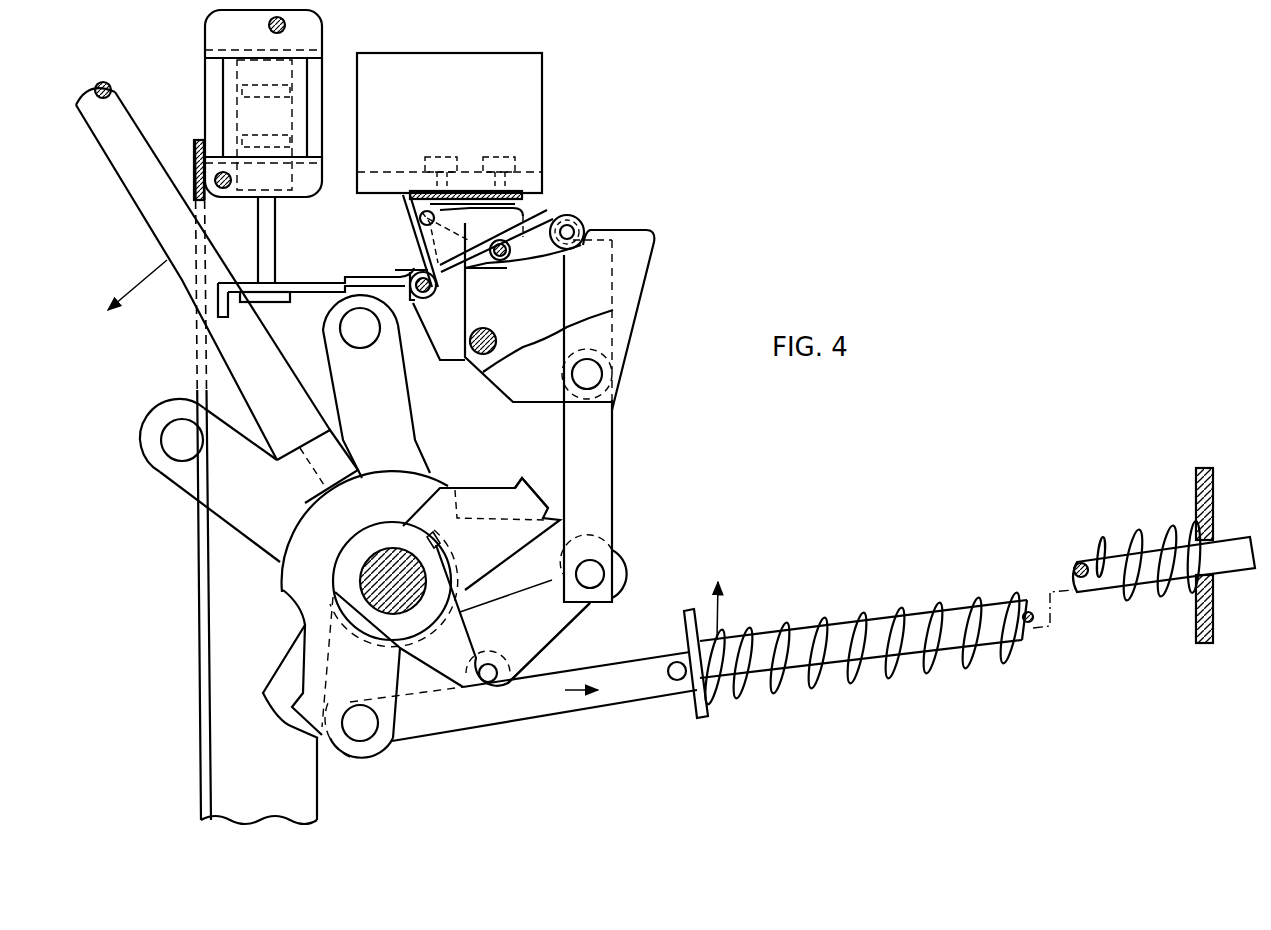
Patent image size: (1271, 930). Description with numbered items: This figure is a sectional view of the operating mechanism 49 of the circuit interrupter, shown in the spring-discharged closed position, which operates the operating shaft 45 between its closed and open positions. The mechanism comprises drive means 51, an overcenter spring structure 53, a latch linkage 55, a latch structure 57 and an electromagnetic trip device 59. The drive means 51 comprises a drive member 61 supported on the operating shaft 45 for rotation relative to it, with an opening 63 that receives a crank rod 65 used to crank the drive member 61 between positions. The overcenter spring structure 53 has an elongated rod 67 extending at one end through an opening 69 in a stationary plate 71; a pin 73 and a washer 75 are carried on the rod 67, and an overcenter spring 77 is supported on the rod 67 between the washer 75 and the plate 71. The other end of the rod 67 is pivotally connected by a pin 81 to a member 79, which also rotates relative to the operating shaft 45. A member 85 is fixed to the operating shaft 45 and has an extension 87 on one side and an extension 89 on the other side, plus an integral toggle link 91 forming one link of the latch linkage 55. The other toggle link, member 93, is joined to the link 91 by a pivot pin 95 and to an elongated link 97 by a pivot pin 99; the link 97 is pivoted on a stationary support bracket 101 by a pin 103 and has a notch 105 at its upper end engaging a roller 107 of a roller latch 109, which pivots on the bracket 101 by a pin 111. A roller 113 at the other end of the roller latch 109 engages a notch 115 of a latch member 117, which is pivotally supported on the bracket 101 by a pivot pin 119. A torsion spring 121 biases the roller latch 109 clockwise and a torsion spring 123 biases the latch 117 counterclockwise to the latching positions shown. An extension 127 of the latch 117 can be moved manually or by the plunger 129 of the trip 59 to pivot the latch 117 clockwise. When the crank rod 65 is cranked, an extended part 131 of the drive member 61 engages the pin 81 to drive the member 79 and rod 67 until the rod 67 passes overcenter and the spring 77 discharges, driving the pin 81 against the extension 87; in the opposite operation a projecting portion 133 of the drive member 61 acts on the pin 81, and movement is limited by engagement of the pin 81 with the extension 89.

The operating shaft 45 is at (363, 574).
The operating mechanism 49 is at (451, 432).
The drive means 51 is at (368, 509).
The overcenter spring structure 53 is at (636, 698).
The latch linkage 55 is at (534, 637).
The latch structure 57 is at (503, 231).
The trip device 59 is at (268, 124).
The drive member 61 is at (296, 527).
The opening 63 is at (295, 452).
The crank rod 65 is at (125, 114).
The elongated rod 67 is at (558, 713).
The opening 69 is at (1216, 542).
The stationary plate 71 is at (1196, 483).
The pin 73 is at (670, 662).
The washer 75 is at (686, 630).
The overcenter spring 77 is at (790, 622).
The member 79 is at (422, 690).
The pin 81 is at (361, 742).
The member 85 is at (476, 552).
The extension 87 is at (483, 497).
The extension 89 is at (305, 722).
The toggle link 91 is at (478, 608).
The member 93 is at (577, 620).
The pivot pin 95 is at (484, 664).
The elongated link 97 is at (598, 473).
The pivot pin 99 is at (598, 562).
The support bracket 101 is at (492, 370).
The pin 103 is at (588, 366).
The notch 105 is at (590, 240).
The roller 107 is at (572, 216).
The roller latch 109 is at (537, 259).
The pin 111 is at (500, 261).
The roller 113 is at (427, 197).
The notch 115 is at (418, 216).
The latch member 117 is at (443, 338).
The roller 119 is at (434, 297).
The torsion spring 121 is at (532, 214).
The torsion spring 123 is at (412, 243).
The extension 127 is at (238, 283).
The plunger 129 is at (285, 303).
The extended part 131 is at (280, 680).
The projecting portion 133 is at (560, 541).